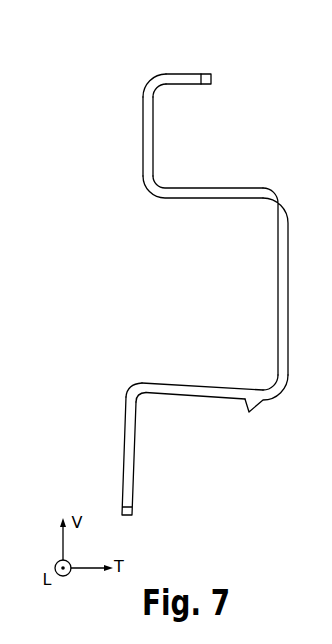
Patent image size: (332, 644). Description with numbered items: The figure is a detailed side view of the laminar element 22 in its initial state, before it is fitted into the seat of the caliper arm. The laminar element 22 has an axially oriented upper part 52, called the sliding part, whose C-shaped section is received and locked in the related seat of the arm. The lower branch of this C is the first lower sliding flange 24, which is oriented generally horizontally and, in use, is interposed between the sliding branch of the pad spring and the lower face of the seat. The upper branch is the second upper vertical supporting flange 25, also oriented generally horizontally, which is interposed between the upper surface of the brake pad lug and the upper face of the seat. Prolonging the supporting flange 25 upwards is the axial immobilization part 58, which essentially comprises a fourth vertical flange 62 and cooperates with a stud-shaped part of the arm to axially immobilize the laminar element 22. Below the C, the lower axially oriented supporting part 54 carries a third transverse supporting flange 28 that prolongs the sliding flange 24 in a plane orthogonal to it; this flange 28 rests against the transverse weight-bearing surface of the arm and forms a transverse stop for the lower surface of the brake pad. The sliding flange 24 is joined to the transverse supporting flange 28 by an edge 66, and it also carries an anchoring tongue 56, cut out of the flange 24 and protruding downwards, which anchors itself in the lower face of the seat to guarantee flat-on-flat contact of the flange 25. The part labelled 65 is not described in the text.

The laminar element 22 is at (190, 62).
The axial immobilization part 58 is at (134, 111).
The upper arm 65 is at (183, 84).
The second upper vertical supporting flange 25 is at (215, 196).
The fourth vertical flange 62 is at (143, 133).
The upper part 52 is at (306, 251).
The first lower sliding flange 24 is at (216, 392).
The edge 66 is at (133, 382).
The lower axially oriented supporting part 54 is at (154, 433).
The anchoring tongue 56 is at (248, 408).
The third transverse supporting flange 28 is at (134, 467).